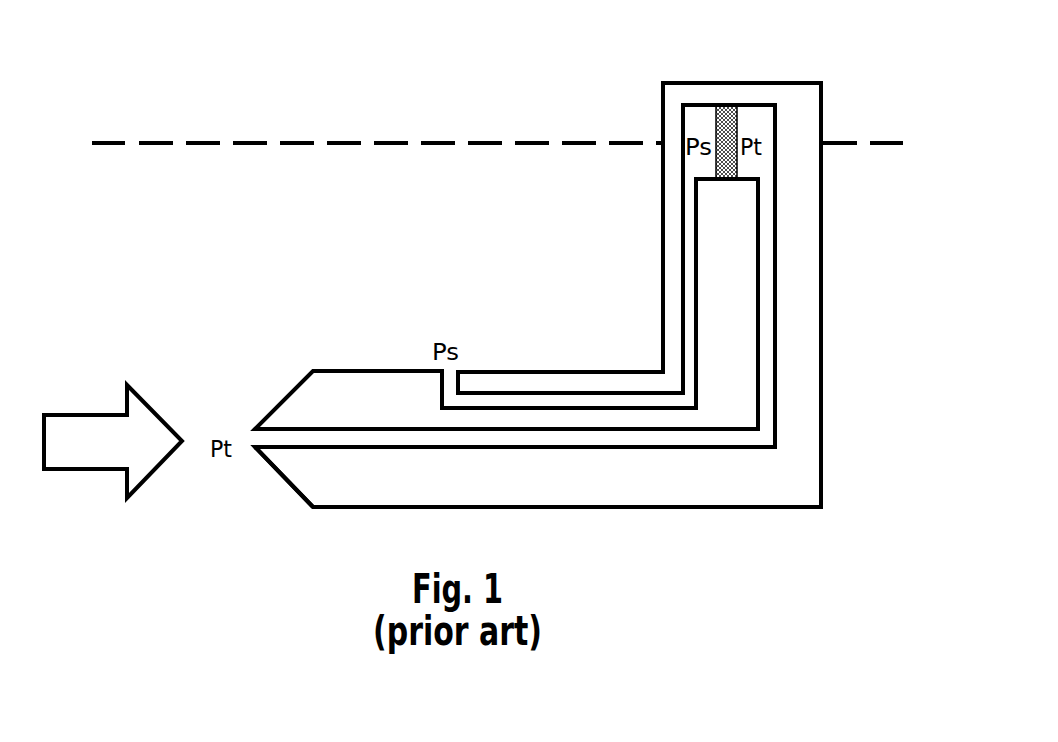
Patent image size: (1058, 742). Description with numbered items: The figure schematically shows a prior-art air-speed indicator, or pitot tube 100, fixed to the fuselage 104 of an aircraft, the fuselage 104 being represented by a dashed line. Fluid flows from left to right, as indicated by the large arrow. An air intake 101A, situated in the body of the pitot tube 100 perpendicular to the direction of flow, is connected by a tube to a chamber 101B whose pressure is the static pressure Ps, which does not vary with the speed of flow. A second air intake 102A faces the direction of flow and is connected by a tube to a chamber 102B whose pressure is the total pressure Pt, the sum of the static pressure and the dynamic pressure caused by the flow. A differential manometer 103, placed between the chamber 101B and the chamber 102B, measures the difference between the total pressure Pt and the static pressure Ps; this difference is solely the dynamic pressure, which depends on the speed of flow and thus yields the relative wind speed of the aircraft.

The pitot tube 100 is at (661, 309).
The air intake 101A is at (415, 350).
The chamber 101B is at (698, 122).
The air intake 102A is at (220, 468).
The chamber 102B is at (752, 120).
The differential manometer 103 is at (725, 105).
The fuselage 104 is at (157, 143).